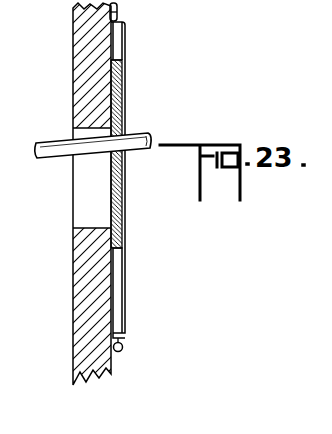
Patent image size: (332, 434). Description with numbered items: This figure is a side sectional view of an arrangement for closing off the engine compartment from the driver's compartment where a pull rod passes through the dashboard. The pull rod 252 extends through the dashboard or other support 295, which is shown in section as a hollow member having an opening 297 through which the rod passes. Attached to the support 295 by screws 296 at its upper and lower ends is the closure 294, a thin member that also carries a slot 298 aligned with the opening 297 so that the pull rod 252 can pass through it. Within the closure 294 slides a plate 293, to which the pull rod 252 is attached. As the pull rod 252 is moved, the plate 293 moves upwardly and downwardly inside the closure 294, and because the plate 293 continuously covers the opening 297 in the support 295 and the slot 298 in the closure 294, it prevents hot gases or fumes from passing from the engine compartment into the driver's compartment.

The pull rod 252 is at (57, 157).
The plate 293 is at (125, 87).
The closure 294 is at (124, 40).
The support 295 is at (80, 24).
The screws 296 is at (116, 8).
The opening 297 is at (88, 209).
The slot 298 is at (125, 207).